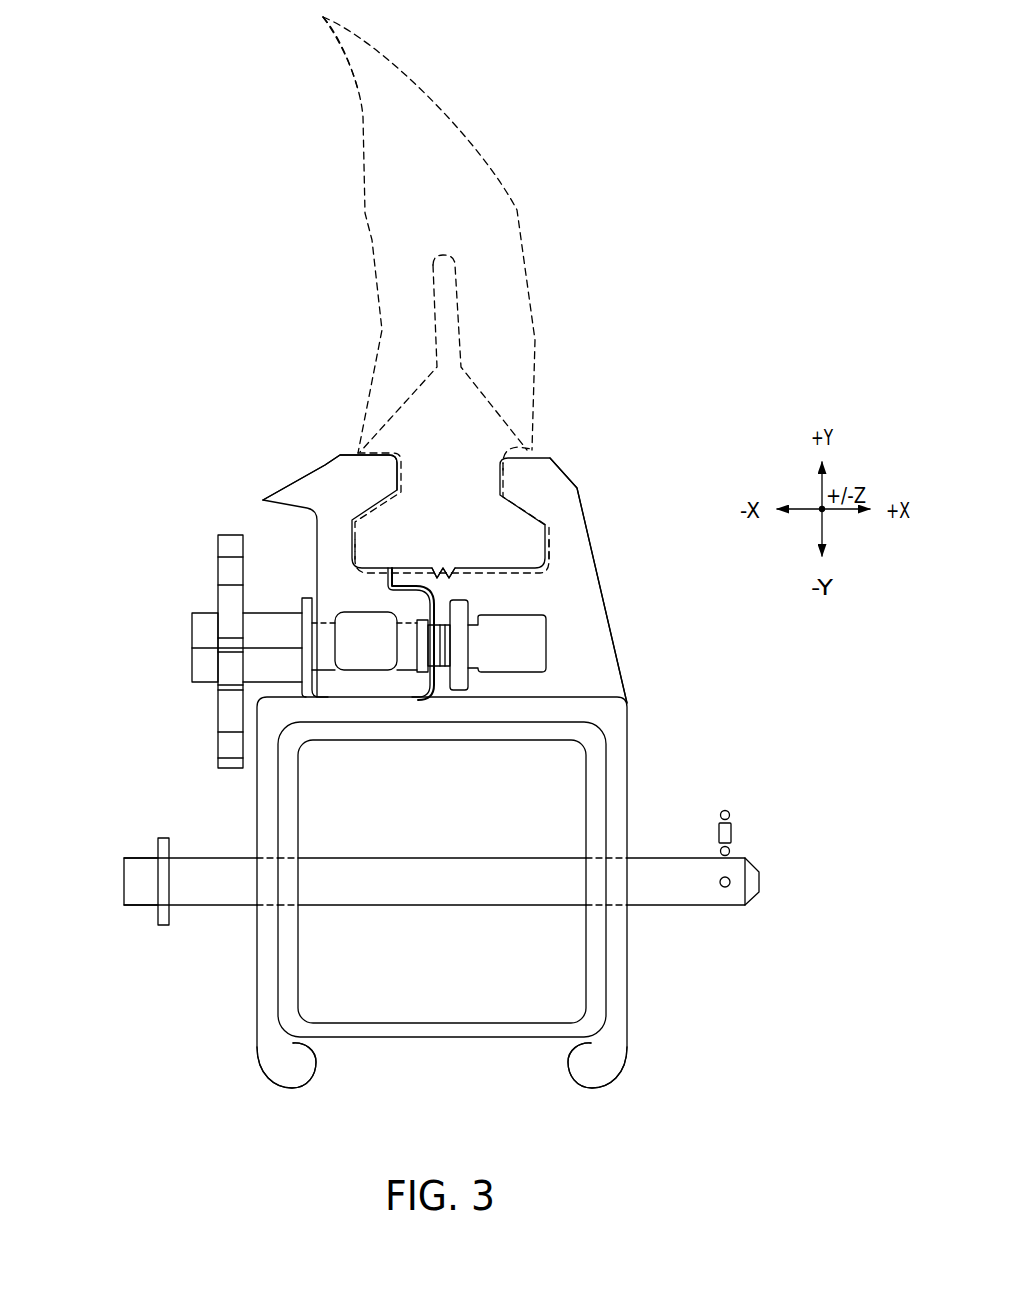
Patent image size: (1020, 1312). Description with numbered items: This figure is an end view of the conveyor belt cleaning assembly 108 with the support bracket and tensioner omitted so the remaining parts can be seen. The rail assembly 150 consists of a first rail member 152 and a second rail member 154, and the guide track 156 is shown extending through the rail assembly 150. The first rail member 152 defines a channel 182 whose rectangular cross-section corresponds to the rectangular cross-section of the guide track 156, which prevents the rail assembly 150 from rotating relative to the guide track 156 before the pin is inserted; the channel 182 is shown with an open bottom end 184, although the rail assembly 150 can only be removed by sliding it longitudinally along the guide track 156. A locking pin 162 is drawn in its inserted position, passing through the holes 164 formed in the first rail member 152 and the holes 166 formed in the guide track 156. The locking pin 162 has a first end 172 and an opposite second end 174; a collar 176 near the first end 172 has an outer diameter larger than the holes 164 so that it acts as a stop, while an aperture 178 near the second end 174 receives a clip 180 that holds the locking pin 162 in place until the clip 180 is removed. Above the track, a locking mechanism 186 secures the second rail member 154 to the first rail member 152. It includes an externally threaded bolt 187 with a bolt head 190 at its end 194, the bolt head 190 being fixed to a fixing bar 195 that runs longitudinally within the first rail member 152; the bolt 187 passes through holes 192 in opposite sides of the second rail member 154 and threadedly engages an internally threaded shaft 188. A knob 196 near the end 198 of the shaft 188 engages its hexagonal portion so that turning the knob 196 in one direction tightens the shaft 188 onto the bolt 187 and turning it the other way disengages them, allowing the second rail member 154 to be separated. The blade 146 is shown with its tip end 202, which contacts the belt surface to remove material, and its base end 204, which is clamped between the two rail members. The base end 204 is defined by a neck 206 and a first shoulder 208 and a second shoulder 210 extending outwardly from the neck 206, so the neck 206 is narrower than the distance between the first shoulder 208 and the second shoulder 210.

The conveyor belt cleaning assembly 108 is at (665, 398).
The blade 146 is at (523, 206).
The rail assembly 150 is at (660, 624).
The first rail member 152 is at (660, 734).
The second rail member 154 is at (279, 462).
The guide track 156 is at (490, 1042).
The locking pin 162 is at (106, 907).
The holes 164 is at (263, 906).
The holes 166 is at (295, 860).
The first end 172 is at (124, 873).
The second end 174 is at (760, 881).
The collar 176 is at (163, 838).
The aperture 178 is at (725, 888).
The clip 180 is at (725, 810).
The channel 182 is at (426, 1012).
The open bottom end 184 is at (343, 1082).
The locking mechanism 186 is at (198, 533).
The bolt 187 is at (379, 681).
The shaft 188 is at (372, 636).
The bolt head 190 is at (470, 620).
The holes 192 is at (326, 620).
The end 194 is at (482, 637).
The fixing bar 195 is at (470, 684).
The knob 196 is at (218, 582).
The end 198 is at (192, 645).
The tip end 202 is at (323, 17).
The base end 204 is at (452, 564).
The neck 206 is at (526, 449).
The first shoulder 208 is at (520, 550).
The second shoulder 210 is at (361, 550).